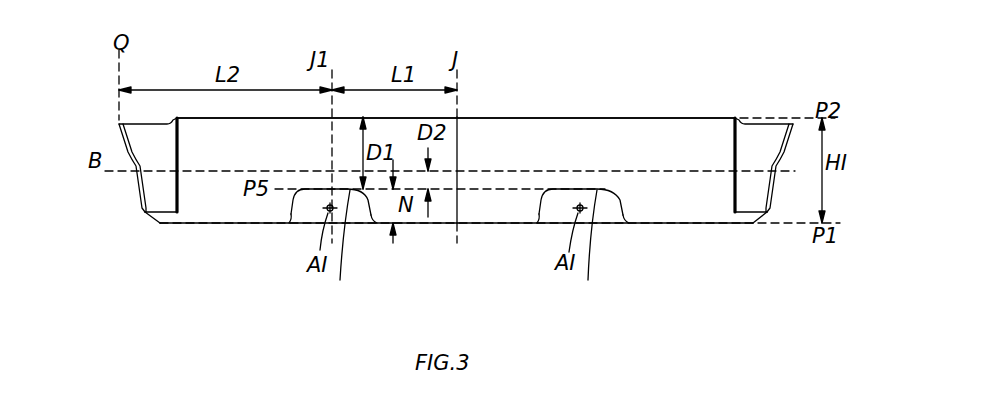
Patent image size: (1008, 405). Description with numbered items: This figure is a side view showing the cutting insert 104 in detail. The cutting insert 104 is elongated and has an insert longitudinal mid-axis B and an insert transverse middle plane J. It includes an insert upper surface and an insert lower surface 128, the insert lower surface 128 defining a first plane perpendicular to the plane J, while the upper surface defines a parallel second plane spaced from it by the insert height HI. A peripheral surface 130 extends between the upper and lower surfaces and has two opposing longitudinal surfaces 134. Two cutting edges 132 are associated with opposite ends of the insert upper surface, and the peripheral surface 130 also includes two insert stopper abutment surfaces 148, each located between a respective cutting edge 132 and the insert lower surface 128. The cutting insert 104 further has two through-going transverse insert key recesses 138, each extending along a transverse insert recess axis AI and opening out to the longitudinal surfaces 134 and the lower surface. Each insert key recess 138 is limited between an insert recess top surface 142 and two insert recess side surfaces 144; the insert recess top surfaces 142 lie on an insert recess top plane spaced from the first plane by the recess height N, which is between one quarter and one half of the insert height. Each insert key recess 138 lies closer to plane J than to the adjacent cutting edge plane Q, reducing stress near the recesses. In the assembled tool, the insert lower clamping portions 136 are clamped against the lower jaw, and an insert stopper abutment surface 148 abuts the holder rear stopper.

The cutting insert 104 is at (445, 164).
The insert lower surface 128 is at (218, 227).
The peripheral surface 130 is at (649, 128).
The cutting edge 132 is at (119, 122).
The longitudinal surface 134 is at (495, 132).
The insert lower clamping portion 136 is at (188, 225).
The insert key recess 138 is at (435, 249).
The insert recess top surface 142 is at (464, 250).
The insert recess side surface 144 is at (290, 226).
The insert stopper abutment surface 148 is at (133, 185).